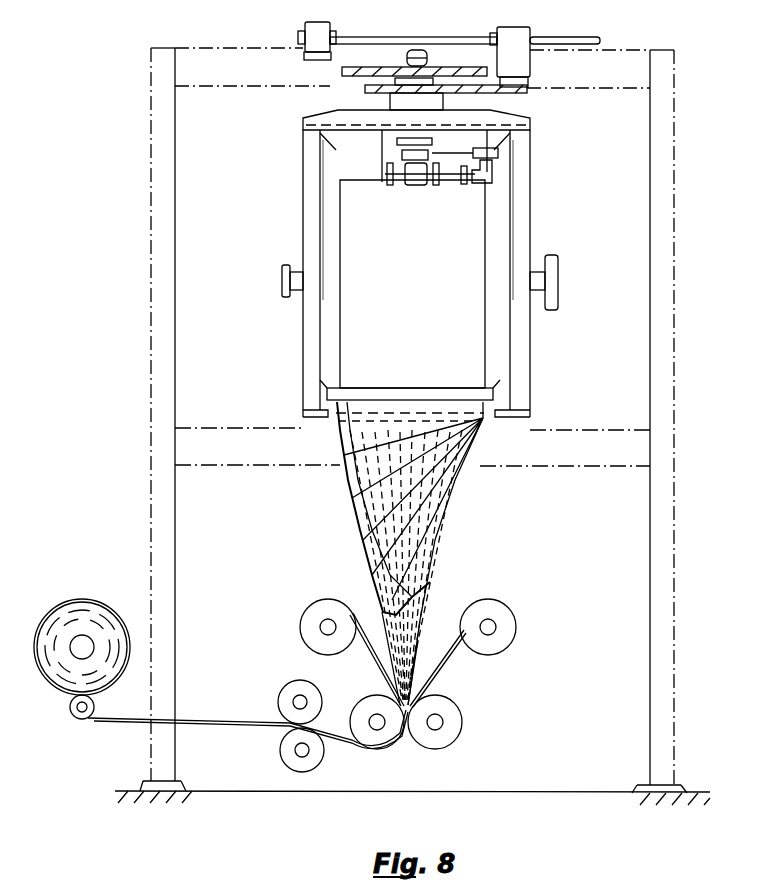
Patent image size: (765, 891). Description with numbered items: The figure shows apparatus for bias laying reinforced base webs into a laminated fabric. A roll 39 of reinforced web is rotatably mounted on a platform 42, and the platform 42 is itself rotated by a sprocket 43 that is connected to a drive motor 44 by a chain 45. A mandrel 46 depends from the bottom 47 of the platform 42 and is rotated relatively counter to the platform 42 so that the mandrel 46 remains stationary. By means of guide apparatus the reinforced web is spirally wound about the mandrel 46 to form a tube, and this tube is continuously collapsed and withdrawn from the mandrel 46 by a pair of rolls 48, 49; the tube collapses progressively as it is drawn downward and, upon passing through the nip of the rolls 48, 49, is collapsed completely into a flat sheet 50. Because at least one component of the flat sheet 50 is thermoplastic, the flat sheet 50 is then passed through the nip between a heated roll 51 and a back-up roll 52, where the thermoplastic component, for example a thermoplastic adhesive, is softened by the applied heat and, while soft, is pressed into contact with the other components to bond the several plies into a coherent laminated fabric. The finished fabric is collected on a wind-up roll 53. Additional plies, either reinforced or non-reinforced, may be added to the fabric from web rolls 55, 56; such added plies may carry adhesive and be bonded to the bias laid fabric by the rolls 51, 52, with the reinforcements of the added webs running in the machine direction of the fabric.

The roll of reinforced web 39 is at (469, 224).
The platform 42 is at (530, 206).
The sprocket 43 is at (365, 91).
The drive motor 44 is at (530, 60).
The chain 45 is at (487, 91).
The mandrel 46 is at (455, 462).
The bottom of the platform 47 is at (348, 422).
The roll 48 is at (366, 702).
The roll 49 is at (442, 702).
The flat sheet 50 is at (355, 750).
The heated roll 51 is at (290, 752).
The back-up roll 52 is at (292, 688).
The wind-up roll 53 is at (88, 605).
The web roll 55 is at (505, 620).
The web roll 56 is at (315, 612).